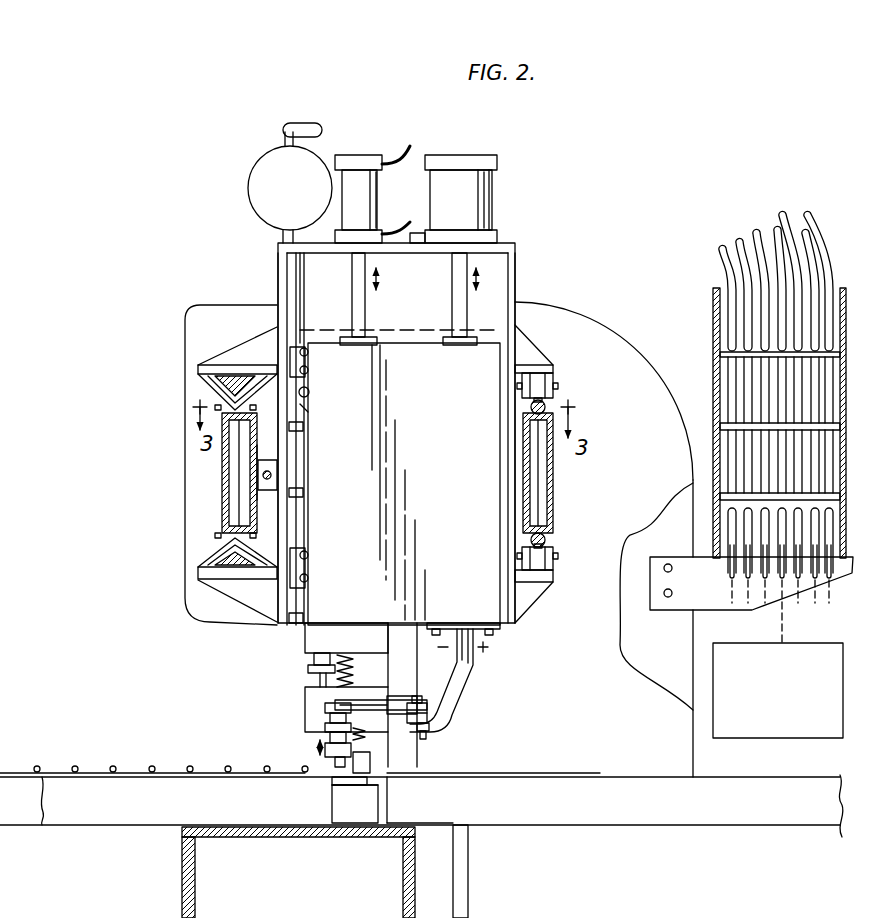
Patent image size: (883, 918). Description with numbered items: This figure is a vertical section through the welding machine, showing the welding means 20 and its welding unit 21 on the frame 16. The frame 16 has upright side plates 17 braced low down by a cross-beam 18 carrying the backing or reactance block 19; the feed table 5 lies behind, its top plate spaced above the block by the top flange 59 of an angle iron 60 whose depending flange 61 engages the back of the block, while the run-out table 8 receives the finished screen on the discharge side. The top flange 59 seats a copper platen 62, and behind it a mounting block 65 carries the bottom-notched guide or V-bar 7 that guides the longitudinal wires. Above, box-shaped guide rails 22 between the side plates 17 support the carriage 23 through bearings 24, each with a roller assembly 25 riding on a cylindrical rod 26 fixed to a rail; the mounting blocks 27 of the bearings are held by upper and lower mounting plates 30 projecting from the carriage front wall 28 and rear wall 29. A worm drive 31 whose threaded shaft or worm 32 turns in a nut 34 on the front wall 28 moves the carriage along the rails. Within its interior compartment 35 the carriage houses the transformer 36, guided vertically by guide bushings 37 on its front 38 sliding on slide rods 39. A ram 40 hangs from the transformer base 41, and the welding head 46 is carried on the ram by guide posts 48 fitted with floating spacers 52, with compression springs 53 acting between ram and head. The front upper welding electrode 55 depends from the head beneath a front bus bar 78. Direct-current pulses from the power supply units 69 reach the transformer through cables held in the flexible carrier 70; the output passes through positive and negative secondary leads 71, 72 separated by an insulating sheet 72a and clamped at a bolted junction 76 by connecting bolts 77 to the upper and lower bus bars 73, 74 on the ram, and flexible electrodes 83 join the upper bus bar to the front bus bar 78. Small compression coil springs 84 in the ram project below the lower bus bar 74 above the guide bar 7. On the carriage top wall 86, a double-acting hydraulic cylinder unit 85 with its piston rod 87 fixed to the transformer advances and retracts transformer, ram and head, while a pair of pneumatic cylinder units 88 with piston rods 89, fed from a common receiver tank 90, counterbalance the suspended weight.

The feed table 5 is at (765, 777).
The guide or V-bar 7 is at (362, 736).
The run-out table 8 is at (67, 829).
The frame 16 is at (598, 322).
The side plates 17 is at (579, 718).
The cross-beam 18 is at (182, 892).
The backing or reactance block 19 is at (344, 820).
The welding means 20 is at (518, 263).
The welding unit 21 is at (276, 277).
The guide rails 22 is at (222, 505).
The carriage 23 is at (518, 301).
The bearings 24 is at (549, 403).
The roller assembly 25 is at (198, 578).
The cylindrical rod 26 is at (238, 414).
The mounting blocks 27 is at (198, 395).
The front wall 28 is at (290, 505).
The rear wall 29 is at (515, 507).
The mounting plates 30 is at (198, 367).
The worm drive 31 is at (248, 445).
The threaded shaft or worm 32 is at (272, 477).
The internally threaded block or nut 34 is at (257, 473).
The interior compartment 35 is at (396, 325).
The transformer 36 is at (398, 406).
The guide bushings 37 is at (288, 360).
The front 38 is at (307, 390).
The slide rods 39 is at (306, 410).
The ram 40 is at (302, 648).
The base or bottom 41 is at (395, 626).
The welding head 46 is at (302, 700).
The guide posts 48 is at (314, 658).
The floating spacers or collars 52 is at (308, 670).
The compression springs 53 is at (358, 625).
The front upper welding electrode 55 is at (325, 755).
The top horizontal flange 59 is at (340, 795).
The angle iron or bracket 60 is at (390, 800).
The vertical depending flange 61 is at (392, 812).
The platen or anvil 62 is at (333, 780).
The mounting block 65 is at (372, 762).
The power supply units 69 is at (830, 643).
The flexible carrier or guide member 70 is at (846, 412).
The positive secondary lead 71 is at (466, 692).
The negative secondary lead 72 is at (448, 706).
The flexible sheet of insulating material 72a is at (475, 670).
The upper bus bar 73 is at (430, 712).
The lower bus bar 74 is at (419, 732).
The bolted junction 76 is at (430, 720).
The connecting bolts 77 is at (430, 738).
The front bus bar 78 is at (328, 713).
The flexible electrodes 83 is at (372, 700).
The compression coil springs 84 is at (342, 705).
The hydraulic cylinder unit 85 is at (345, 203).
The top wall 86 is at (393, 257).
The piston rod 87 is at (352, 290).
The pneumatic cylinder units 88 is at (445, 198).
The piston rods 89 is at (452, 288).
The receiver tank 90 is at (278, 200).